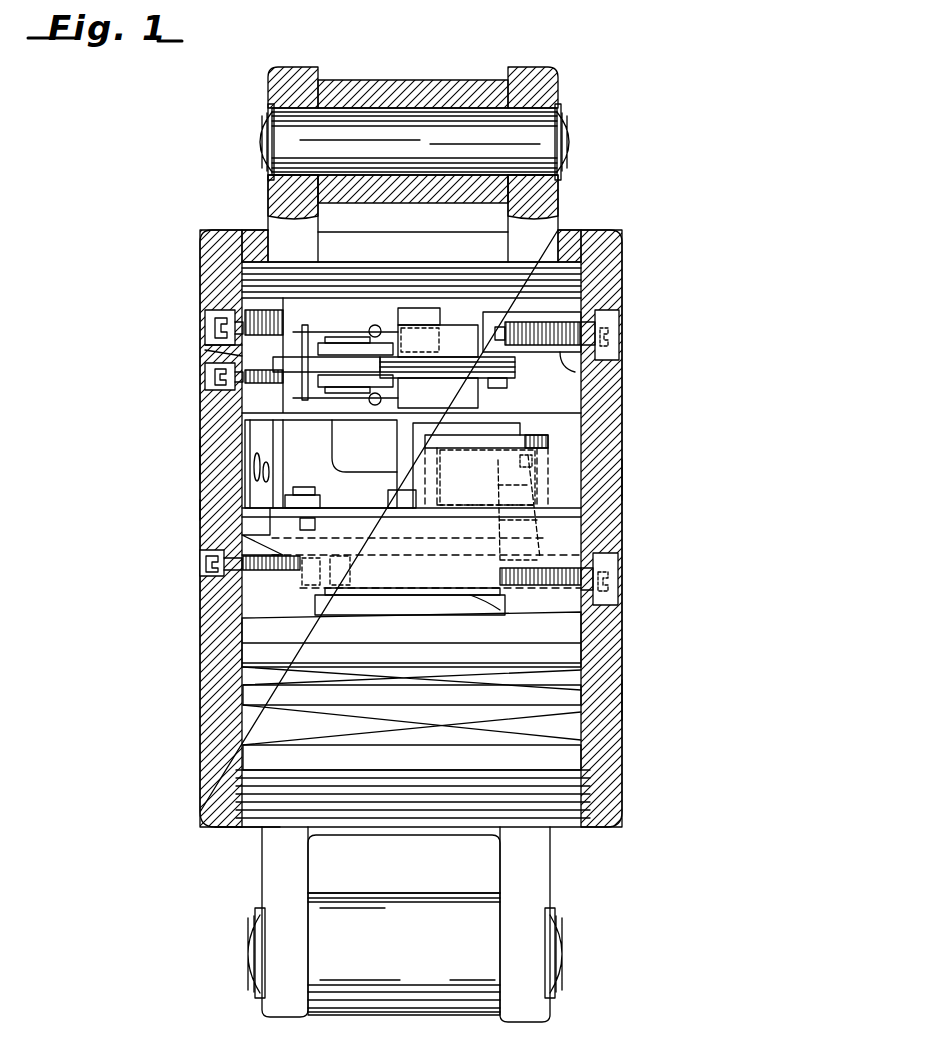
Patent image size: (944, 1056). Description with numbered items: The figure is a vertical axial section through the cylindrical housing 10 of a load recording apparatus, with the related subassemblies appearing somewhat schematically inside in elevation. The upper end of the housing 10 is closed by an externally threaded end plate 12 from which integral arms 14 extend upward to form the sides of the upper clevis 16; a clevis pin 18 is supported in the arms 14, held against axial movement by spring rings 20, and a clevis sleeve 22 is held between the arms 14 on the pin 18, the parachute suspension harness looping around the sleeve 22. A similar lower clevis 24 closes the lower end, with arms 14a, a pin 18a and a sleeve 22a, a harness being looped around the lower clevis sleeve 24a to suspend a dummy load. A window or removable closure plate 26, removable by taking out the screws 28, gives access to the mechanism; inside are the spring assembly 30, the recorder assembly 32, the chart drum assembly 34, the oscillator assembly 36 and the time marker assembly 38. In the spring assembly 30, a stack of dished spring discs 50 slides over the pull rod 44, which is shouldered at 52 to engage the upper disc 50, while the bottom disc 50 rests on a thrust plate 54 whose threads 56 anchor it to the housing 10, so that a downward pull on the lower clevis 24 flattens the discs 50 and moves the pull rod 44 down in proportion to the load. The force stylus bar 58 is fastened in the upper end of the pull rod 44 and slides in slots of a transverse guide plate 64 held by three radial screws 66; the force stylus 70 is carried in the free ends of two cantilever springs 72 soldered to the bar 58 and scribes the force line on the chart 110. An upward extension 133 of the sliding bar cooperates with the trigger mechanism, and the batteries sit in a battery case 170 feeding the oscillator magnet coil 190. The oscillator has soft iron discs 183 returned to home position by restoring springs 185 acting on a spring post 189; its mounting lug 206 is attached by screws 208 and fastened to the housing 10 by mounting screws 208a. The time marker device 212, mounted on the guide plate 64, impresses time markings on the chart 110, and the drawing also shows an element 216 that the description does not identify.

The cylindrical housing 10 is at (616, 514).
The externally threaded end plate 12 is at (612, 277).
The integral arms 14 is at (560, 223).
The lower clevis arms 14a is at (262, 856).
The upper clevis 16 is at (448, 74).
The clevis pin 18 is at (575, 150).
The lower clevis pin 18a is at (572, 956).
The spring rings 20 is at (568, 108).
The clevis sleeve 22 is at (352, 200).
The lower clevis sleeve 22a is at (412, 915).
The lower clevis 24 is at (412, 924).
The lower clevis sleeve 24a is at (435, 964).
The removable closure plate 26 is at (206, 460).
The screws 28 is at (201, 358).
The force spring subassembly 30 is at (626, 702).
The recorder assembly 32 is at (190, 480).
The chart drum assembly 34 is at (628, 482).
The oscillator assembly 36 is at (190, 379).
The time marker assembly 38 is at (186, 326).
The pull rod 44 is at (495, 603).
The dished spring discs 50 is at (590, 637).
The shoulder 52 is at (395, 620).
The thrust plate 54 is at (580, 793).
The threads 56 is at (240, 784).
The force stylus bar 58 is at (318, 598).
The transverse guide plate 64 is at (248, 584).
The screws 66 is at (622, 591).
The force stylus 70 is at (496, 490).
The cantilever springs 72 is at (545, 509).
The chart 110 is at (484, 455).
The upward extension 133 is at (393, 489).
The battery case 170 is at (378, 451).
The soft iron discs 183 is at (292, 363).
The restoring springs 185 is at (370, 331).
The spring post 189 is at (302, 398).
The oscillator magnet coil 190 is at (456, 398).
The mounting lug 206 is at (240, 405).
The screws 208 is at (503, 380).
The mounting screws 208a is at (230, 318).
The time marker device 212 is at (476, 422).
The terminal 216 is at (538, 465).